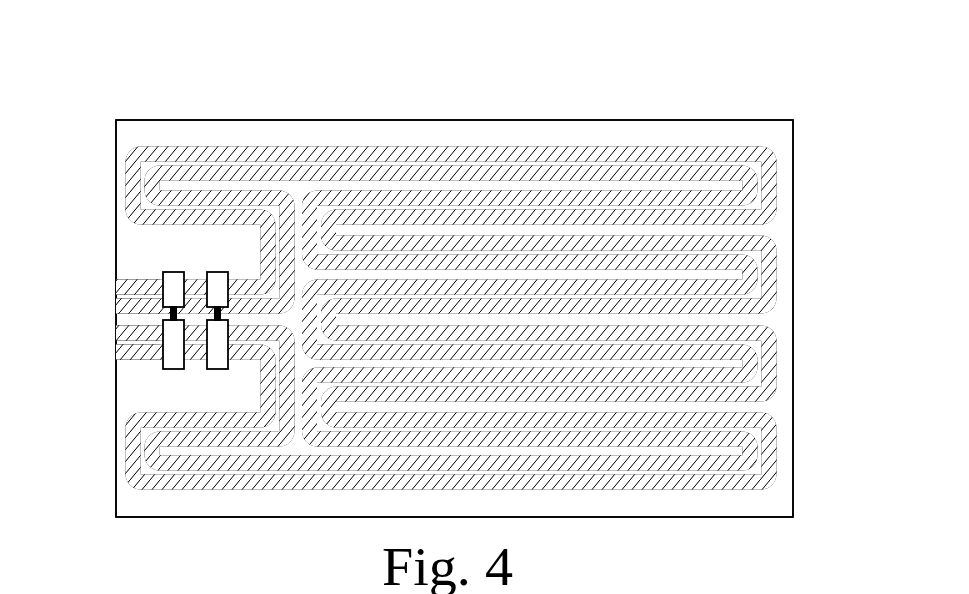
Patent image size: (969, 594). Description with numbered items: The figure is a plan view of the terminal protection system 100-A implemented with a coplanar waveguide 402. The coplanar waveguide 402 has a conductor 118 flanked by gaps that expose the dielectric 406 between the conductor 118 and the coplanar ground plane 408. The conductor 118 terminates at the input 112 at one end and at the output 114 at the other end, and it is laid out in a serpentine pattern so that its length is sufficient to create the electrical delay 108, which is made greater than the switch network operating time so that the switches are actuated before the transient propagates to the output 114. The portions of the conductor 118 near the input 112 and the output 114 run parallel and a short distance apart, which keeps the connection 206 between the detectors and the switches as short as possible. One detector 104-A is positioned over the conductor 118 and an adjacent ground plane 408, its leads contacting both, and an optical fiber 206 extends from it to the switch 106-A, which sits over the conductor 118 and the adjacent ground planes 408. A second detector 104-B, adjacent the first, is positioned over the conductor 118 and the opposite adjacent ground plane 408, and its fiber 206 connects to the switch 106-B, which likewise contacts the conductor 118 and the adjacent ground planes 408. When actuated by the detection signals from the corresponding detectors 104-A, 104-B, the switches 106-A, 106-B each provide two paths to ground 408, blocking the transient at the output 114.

The terminal protection system 100-A is at (772, 75).
The coplanar waveguide 402 is at (192, 120).
The coplanar ground plane 408 is at (552, 133).
The conductor 118 is at (380, 160).
The electrical delay 108 is at (642, 158).
The dielectric 406 is at (455, 148).
The detector 104-A is at (166, 272).
The detector 104-B is at (216, 272).
The switch 106-A is at (177, 369).
The switch 106-B is at (217, 370).
The input 112 is at (116, 292).
The output 114 is at (116, 344).
The optical fiber 206 is at (170, 315).